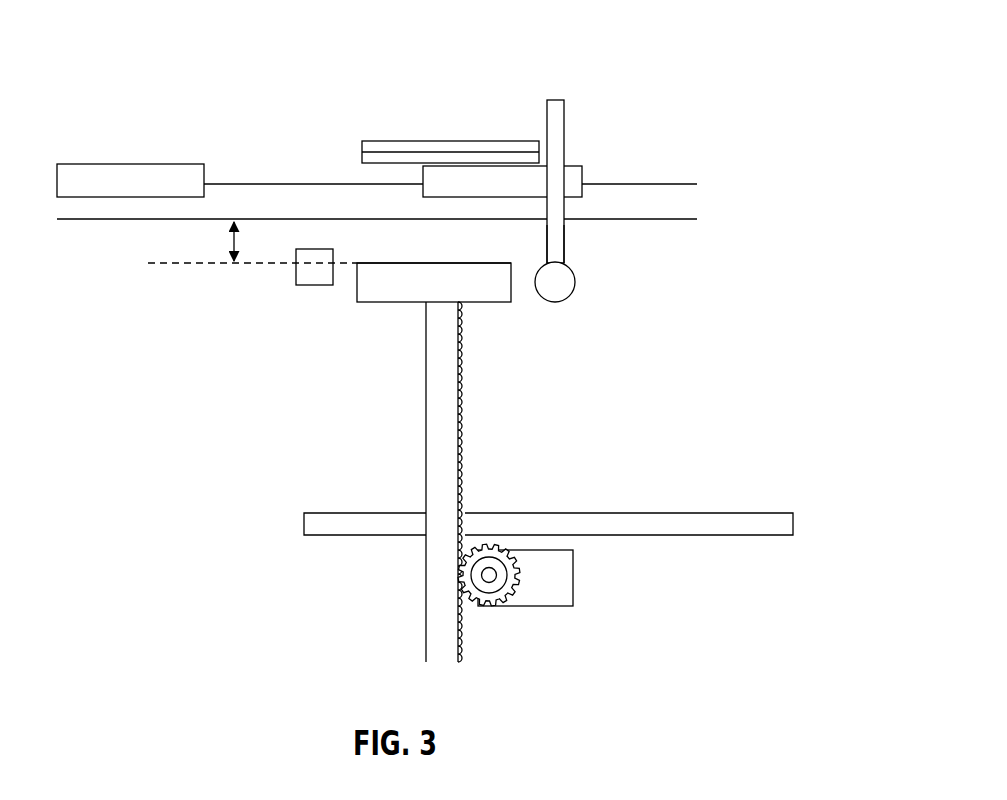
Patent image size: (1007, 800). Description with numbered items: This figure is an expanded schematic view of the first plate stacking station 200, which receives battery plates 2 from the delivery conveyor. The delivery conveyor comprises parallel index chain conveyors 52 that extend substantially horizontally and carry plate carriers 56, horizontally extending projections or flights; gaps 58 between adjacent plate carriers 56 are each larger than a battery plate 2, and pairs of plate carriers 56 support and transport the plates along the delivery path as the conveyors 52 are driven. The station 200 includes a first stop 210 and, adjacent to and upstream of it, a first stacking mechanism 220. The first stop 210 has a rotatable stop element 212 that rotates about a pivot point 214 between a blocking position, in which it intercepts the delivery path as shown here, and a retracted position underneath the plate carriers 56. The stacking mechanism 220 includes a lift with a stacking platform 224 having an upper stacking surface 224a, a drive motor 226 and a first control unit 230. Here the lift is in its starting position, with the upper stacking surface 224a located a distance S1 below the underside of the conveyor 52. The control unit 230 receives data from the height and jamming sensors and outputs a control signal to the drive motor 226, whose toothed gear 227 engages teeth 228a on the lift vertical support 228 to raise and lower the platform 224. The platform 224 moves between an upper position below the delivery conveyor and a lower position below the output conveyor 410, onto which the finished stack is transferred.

The battery plate 2 is at (403, 155).
The index chain conveyor 52 is at (102, 213).
The plate carrier 56 is at (120, 176).
The gap 58 is at (277, 193).
The distance S1 is at (252, 253).
The first plate stacking station 200 is at (480, 88).
The first stop 210 is at (564, 117).
The rotatable stop element 212 is at (558, 235).
The pivot point 214 is at (557, 292).
The first stacking mechanism 220 is at (677, 279).
The stacking platform 224 is at (377, 295).
The upper stacking surface 224a is at (390, 263).
The drive motor 226 is at (478, 585).
The toothed gear 227 is at (503, 586).
The lift vertical support 228 is at (448, 407).
The teeth 228a is at (462, 457).
The first control unit 230 is at (562, 587).
The output conveyor 410 is at (323, 525).